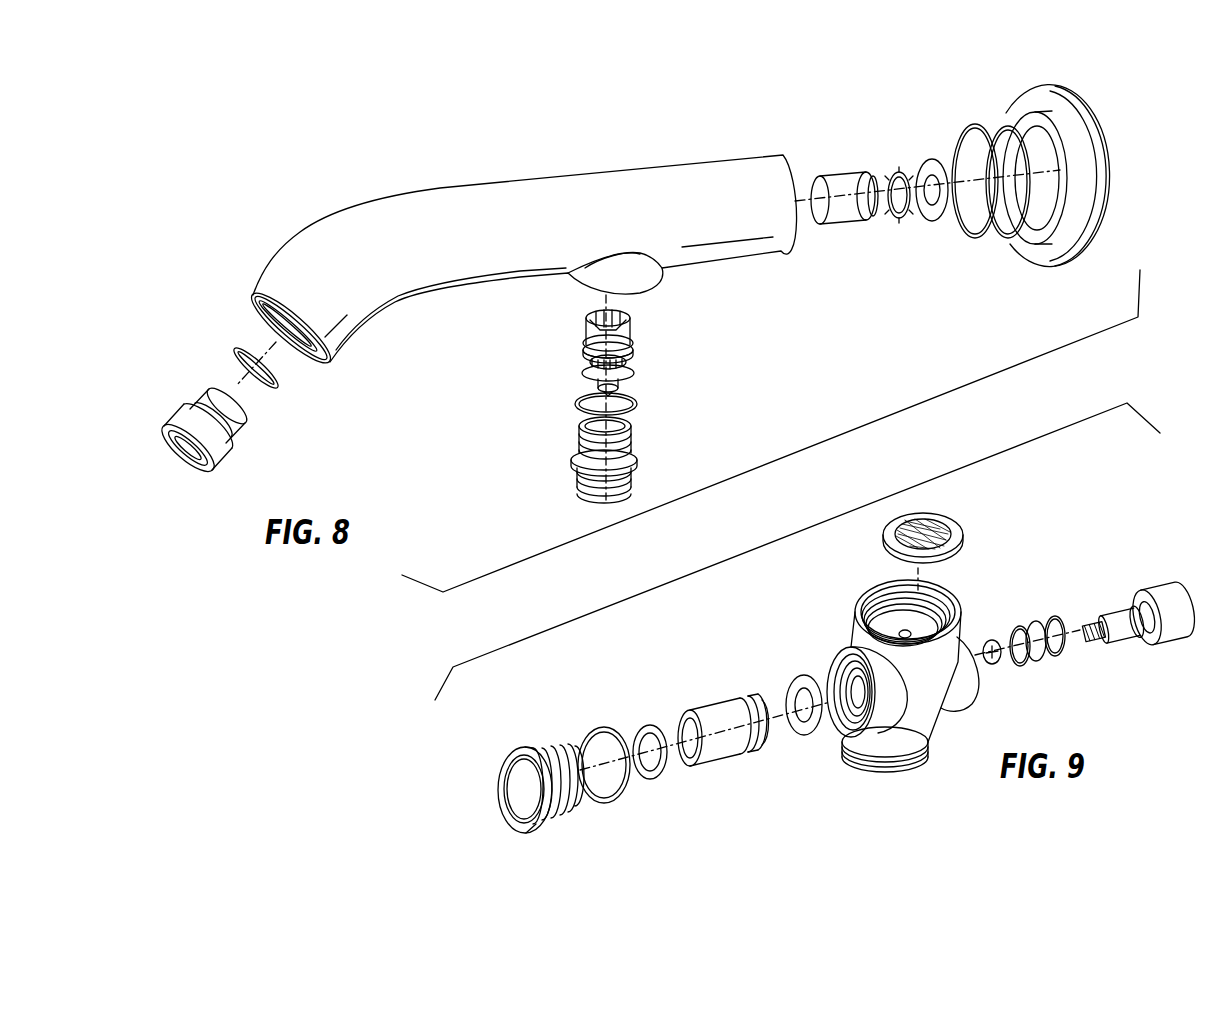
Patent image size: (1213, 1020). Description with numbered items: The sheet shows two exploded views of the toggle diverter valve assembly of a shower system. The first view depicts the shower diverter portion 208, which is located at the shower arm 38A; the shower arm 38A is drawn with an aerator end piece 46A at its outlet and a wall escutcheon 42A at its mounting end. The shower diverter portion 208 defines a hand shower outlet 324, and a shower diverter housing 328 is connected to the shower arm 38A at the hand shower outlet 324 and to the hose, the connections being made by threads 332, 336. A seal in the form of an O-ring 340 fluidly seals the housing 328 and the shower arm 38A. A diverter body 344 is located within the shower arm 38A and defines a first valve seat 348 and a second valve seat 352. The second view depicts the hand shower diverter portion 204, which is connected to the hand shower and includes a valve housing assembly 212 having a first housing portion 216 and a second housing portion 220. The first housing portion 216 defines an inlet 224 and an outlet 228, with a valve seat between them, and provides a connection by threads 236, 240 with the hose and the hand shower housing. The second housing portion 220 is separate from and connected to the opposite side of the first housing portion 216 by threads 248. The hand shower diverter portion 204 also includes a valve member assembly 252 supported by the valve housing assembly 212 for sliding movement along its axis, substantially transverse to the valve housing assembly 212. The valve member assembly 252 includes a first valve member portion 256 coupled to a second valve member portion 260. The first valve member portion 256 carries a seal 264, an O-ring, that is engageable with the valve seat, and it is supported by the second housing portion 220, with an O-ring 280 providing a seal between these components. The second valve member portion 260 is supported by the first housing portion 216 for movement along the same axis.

In FIG. 8, the shower arm 38A is at (508, 180).
In FIG. 8, the aerator 46A is at (226, 256).
In FIG. 8, the escutcheon 42A is at (1113, 89).
In FIG. 8, the hand shower outlet 324 is at (605, 408).
In FIG. 8, the diverter body 344 is at (633, 337).
In FIG. 8, the second valve seat 352 is at (585, 330).
In FIG. 8, the first valve seat 348 is at (582, 378).
In FIG. 8, the O-ring 340 is at (634, 397).
In FIG. 8, the threads 332 is at (578, 431).
In FIG. 8, the shower diverter housing 328 is at (604, 469).
In FIG. 8, the threads 336 is at (568, 481).
In FIG. 8, the shower diverter portion 208 is at (716, 401).
In FIG. 9, the valve housing assembly 212 is at (910, 682).
In FIG. 9, the threads 240 is at (932, 597).
In FIG. 9, the threads 248 is at (826, 742).
In FIG. 9, the first housing portion 216 is at (948, 712).
In FIG. 9, the threads 236 is at (924, 752).
In FIG. 9, the outlet 228 is at (870, 573).
In FIG. 9, the valve member assembly 252 is at (1088, 661).
In FIG. 9, the second valve member portion 260 is at (1118, 598).
In FIG. 9, the hand shower diverter portion 204 is at (743, 753).
In FIG. 9, the second housing portion 220 is at (546, 826).
In FIG. 9, the O-ring 280 is at (653, 783).
In FIG. 9, the first valve member portion 256 is at (720, 766).
In FIG. 9, the seal 264 is at (797, 678).
In FIG. 9, the inlet 224 is at (858, 782).